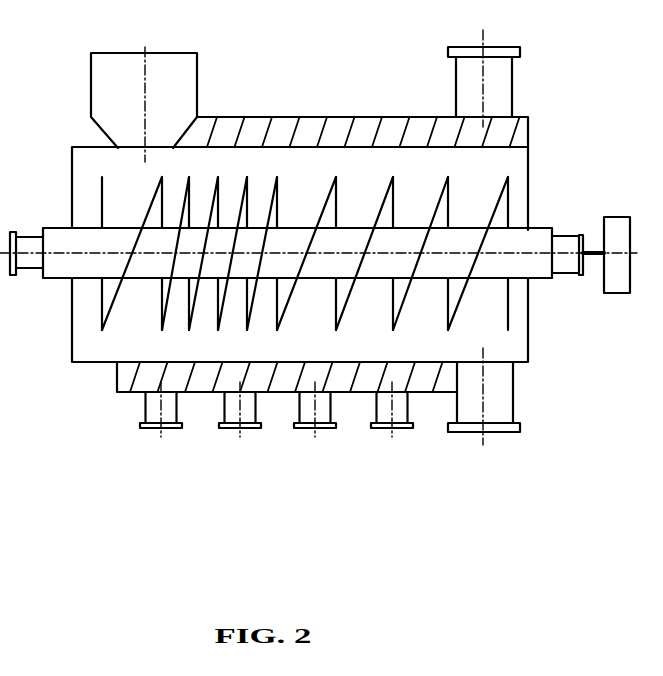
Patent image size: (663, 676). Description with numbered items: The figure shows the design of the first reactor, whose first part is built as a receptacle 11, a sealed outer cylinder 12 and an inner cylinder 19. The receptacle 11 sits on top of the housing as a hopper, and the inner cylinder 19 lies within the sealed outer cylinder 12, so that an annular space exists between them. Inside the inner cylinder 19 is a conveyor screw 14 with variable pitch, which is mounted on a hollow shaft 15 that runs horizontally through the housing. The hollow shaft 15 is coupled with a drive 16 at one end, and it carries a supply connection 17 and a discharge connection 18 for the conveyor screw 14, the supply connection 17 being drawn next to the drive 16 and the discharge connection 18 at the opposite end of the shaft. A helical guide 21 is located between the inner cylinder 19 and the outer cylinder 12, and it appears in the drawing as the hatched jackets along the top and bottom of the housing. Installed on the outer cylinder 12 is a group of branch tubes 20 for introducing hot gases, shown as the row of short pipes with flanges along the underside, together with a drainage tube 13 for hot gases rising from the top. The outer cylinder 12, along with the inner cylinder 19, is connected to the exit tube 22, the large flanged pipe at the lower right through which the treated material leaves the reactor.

The receptacle 11 is at (173, 87).
The sealed outer cylinder 12 is at (253, 117).
The drainage tube 13 is at (502, 103).
The conveyor screw 14 is at (507, 193).
The hollow shaft 15 is at (542, 239).
The drive 16 is at (622, 287).
The supply connection 17 is at (565, 258).
The discharge connection 18 is at (25, 242).
The inner cylinder 19 is at (100, 360).
The branch tubes 20 is at (387, 417).
The helical guide 21 is at (425, 383).
The exit tube 22 is at (468, 417).